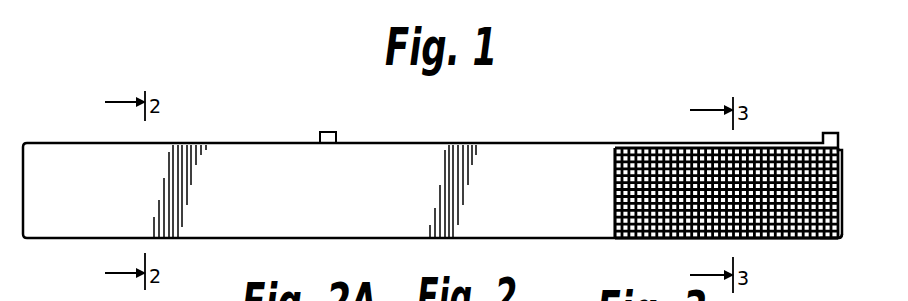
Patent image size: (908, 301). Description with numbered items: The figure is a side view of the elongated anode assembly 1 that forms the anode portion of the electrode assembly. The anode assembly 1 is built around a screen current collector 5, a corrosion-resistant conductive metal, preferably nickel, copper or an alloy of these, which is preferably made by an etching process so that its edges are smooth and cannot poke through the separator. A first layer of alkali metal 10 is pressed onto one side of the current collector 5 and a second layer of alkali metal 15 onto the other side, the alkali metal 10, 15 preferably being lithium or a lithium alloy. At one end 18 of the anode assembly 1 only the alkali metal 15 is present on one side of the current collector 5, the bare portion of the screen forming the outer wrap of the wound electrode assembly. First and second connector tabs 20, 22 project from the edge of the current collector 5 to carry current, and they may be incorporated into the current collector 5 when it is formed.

The anode assembly 1 is at (470, 144).
The current collector 5 is at (818, 190).
The first layer of alkali metal 10 is at (250, 163).
The second layer of alkali metal 15 is at (776, 143).
The end 18 is at (810, 240).
The first connector tab 20 is at (336, 134).
The second connector tab 22 is at (833, 133).